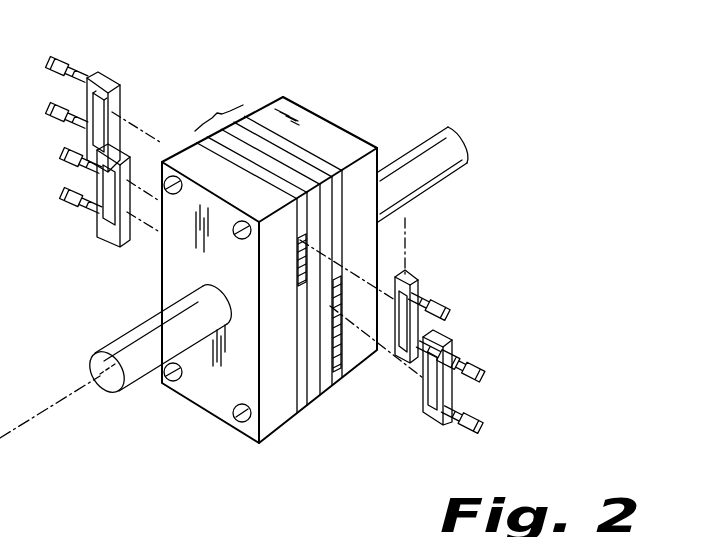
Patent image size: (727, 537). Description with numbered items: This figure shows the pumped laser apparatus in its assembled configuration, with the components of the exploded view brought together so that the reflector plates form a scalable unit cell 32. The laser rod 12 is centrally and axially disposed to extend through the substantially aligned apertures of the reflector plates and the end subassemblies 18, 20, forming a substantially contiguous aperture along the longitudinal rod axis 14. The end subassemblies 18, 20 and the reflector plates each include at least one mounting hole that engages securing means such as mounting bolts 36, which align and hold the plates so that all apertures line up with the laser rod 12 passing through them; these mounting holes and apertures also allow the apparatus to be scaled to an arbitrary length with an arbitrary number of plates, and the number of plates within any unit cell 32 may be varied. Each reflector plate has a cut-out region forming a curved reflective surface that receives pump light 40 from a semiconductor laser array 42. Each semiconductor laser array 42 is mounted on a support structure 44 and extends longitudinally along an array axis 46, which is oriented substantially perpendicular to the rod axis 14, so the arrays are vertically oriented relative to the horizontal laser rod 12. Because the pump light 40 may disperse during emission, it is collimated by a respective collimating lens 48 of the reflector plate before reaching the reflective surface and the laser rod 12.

The laser rod 12 is at (88, 363).
The rod axis 14 is at (22, 438).
The end subassembly 18 is at (198, 392).
The end subassembly 20 is at (308, 125).
The unit cell 32 is at (212, 107).
The mounting bolt 36 is at (167, 385).
The pump light 40 is at (120, 242).
The semiconductor laser array 42 is at (103, 74).
The support structure 44 is at (483, 374).
The array axis 46 is at (407, 227).
The collimating lens 48 is at (299, 288).